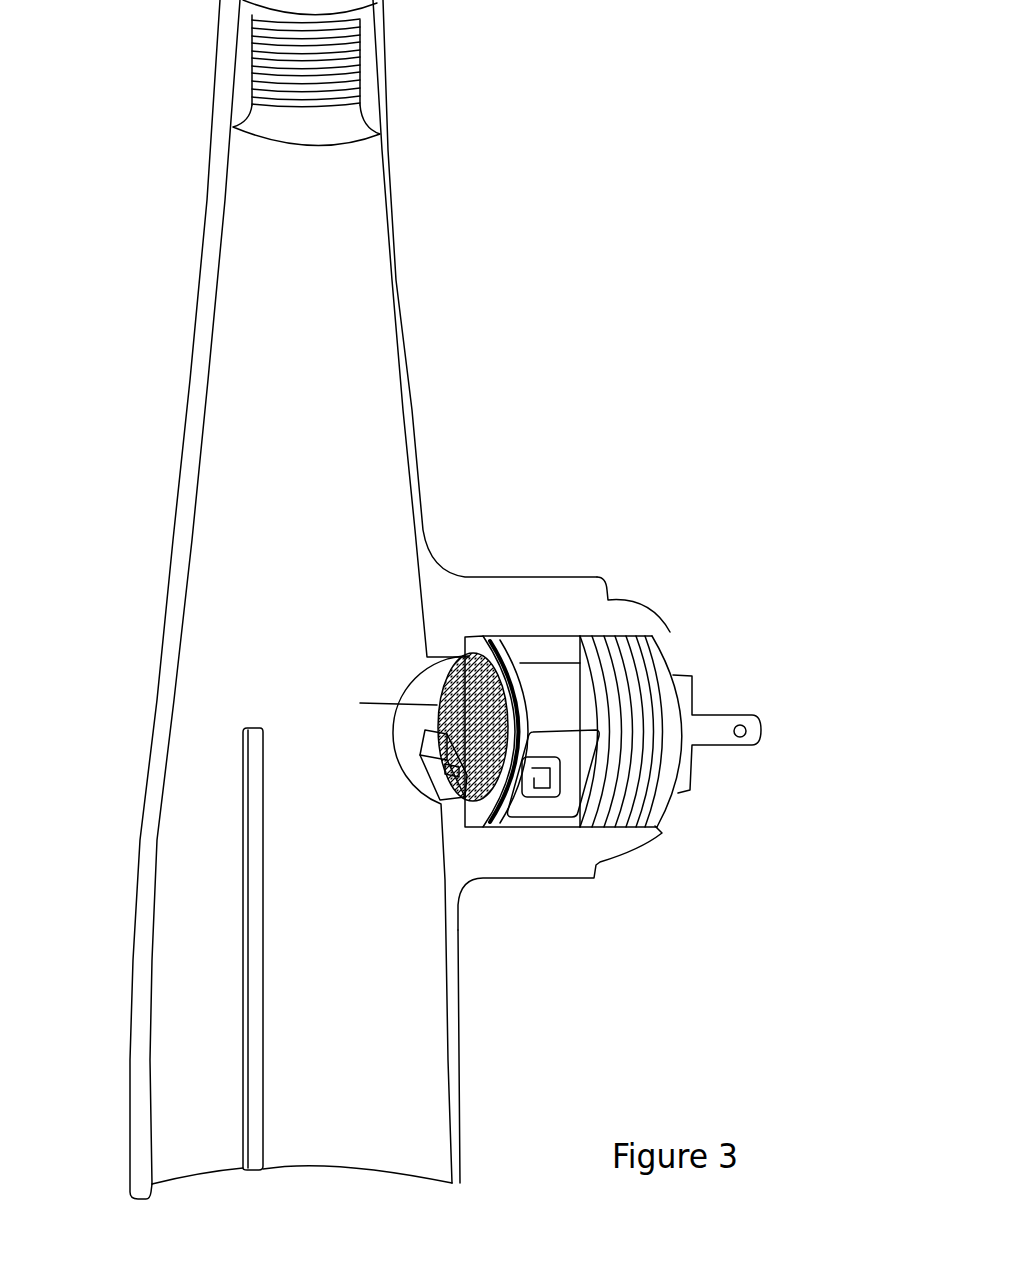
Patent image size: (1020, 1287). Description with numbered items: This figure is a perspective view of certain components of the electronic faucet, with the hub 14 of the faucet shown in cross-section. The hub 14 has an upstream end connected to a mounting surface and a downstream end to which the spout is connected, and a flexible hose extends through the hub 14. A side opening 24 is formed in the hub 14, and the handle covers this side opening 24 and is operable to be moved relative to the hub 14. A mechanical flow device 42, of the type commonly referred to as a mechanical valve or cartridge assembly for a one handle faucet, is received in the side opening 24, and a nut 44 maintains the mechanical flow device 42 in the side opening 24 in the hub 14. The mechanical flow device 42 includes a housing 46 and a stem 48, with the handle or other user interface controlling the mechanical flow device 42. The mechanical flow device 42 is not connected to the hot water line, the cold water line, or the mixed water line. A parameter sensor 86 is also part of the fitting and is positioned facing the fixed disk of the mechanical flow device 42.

The spout 14 is at (155, 594).
The valve housing boss 24 is at (673, 622).
The cartridge 42 is at (546, 627).
The threaded portion 44 is at (660, 807).
The cartridge label 46 is at (532, 827).
The connector tab 48 is at (762, 731).
The seal collar 86 is at (475, 627).